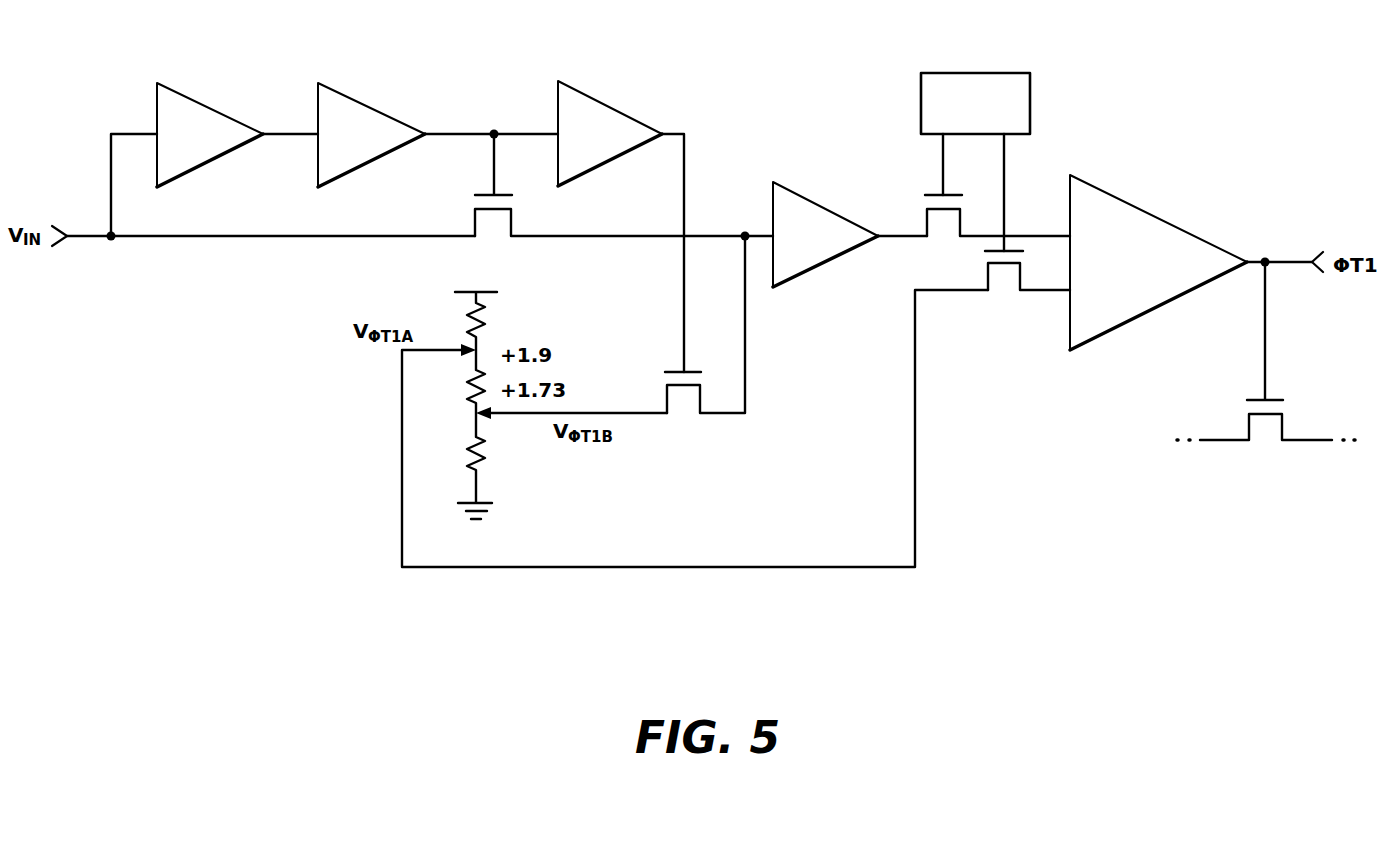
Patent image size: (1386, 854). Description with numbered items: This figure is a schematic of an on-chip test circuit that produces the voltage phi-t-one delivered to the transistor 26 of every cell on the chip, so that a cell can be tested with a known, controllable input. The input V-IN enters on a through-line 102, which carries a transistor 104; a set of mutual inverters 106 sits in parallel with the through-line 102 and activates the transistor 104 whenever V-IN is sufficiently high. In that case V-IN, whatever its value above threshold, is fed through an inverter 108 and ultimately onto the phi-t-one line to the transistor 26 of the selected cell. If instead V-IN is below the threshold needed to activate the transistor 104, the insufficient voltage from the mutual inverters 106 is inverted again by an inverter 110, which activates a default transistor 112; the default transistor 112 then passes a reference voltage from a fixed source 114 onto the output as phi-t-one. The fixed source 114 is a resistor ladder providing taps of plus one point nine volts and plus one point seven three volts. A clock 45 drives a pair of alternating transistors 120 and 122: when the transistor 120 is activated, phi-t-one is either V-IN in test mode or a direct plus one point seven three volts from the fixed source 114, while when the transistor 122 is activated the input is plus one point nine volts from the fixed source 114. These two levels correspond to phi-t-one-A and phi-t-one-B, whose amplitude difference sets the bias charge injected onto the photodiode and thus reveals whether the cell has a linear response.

The through-line 102 is at (88, 240).
The transistor 104 is at (495, 239).
The mutual inverters 106 is at (358, 98).
The inverter 108 is at (812, 197).
The inverter 110 is at (600, 98).
The default transistor 112 is at (685, 416).
The fixed source 114 is at (478, 423).
The alternating transistor 120 is at (943, 246).
The alternating transistor 122 is at (1003, 301).
The clock 45 is at (962, 73).
The transistor 26 is at (1267, 447).